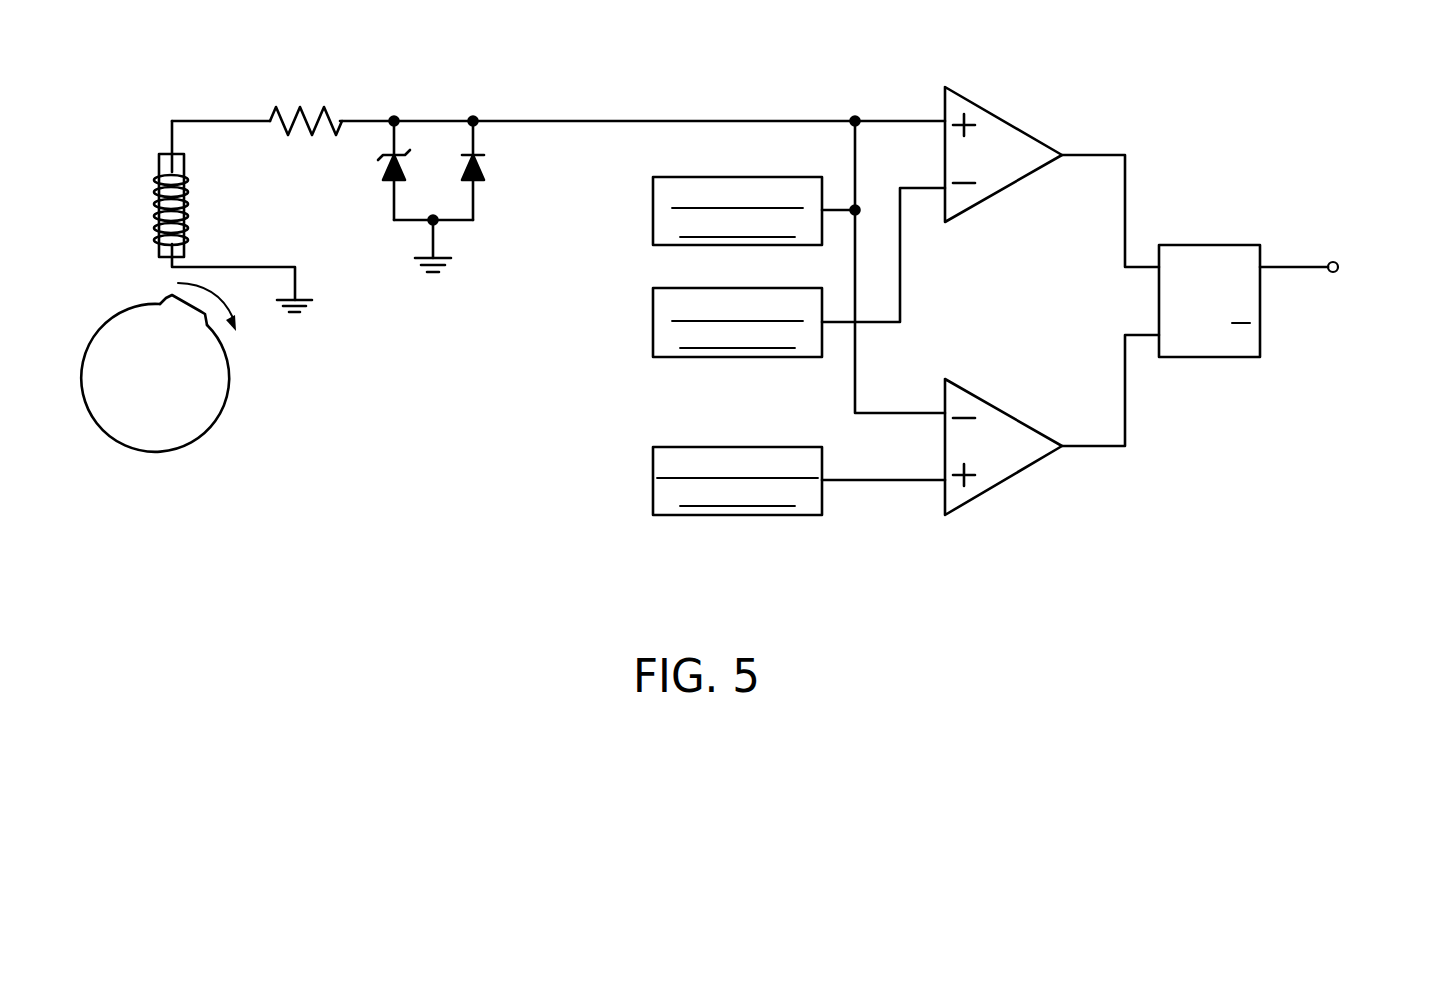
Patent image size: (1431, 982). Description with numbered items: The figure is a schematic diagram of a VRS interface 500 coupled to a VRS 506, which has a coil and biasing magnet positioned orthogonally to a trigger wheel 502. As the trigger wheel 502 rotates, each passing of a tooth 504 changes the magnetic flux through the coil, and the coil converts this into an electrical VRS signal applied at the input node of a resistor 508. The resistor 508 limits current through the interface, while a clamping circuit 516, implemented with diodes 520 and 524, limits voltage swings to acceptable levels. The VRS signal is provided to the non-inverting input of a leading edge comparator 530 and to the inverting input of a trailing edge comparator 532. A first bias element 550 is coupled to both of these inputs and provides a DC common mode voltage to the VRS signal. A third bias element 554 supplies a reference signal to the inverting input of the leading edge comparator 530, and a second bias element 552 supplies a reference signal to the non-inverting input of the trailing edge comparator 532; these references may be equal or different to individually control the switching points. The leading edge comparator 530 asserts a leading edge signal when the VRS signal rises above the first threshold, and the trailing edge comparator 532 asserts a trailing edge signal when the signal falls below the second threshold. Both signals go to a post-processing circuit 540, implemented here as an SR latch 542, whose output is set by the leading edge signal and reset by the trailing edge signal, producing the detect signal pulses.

The VRS interface 500 is at (731, 568).
The trigger wheel 502 is at (193, 365).
The tooth 504 is at (166, 300).
The VRS 506 is at (152, 173).
The resistor 508 is at (300, 104).
The clamping circuit 516 is at (441, 146).
The diode 520 is at (385, 177).
The diode 524 is at (481, 178).
The leading edge comparator 530 is at (990, 111).
The trailing edge comparator 532 is at (981, 398).
The post-processing circuit 540 is at (1293, 260).
The SR latch 542 is at (1218, 245).
The first bias element 550 is at (688, 177).
The second bias element 552 is at (685, 447).
The third bias element 554 is at (697, 288).